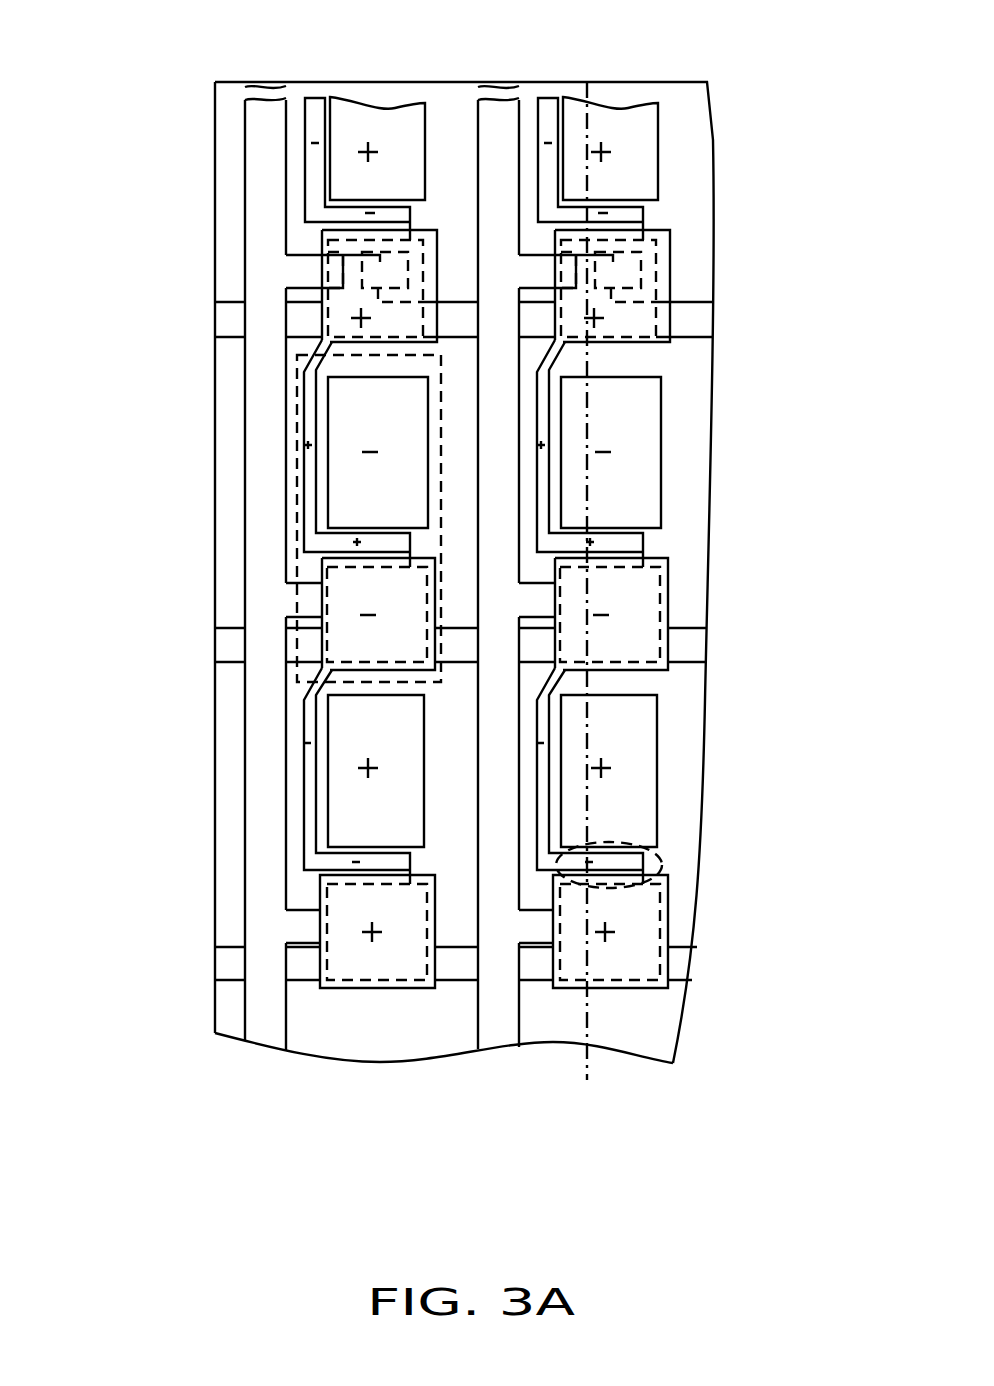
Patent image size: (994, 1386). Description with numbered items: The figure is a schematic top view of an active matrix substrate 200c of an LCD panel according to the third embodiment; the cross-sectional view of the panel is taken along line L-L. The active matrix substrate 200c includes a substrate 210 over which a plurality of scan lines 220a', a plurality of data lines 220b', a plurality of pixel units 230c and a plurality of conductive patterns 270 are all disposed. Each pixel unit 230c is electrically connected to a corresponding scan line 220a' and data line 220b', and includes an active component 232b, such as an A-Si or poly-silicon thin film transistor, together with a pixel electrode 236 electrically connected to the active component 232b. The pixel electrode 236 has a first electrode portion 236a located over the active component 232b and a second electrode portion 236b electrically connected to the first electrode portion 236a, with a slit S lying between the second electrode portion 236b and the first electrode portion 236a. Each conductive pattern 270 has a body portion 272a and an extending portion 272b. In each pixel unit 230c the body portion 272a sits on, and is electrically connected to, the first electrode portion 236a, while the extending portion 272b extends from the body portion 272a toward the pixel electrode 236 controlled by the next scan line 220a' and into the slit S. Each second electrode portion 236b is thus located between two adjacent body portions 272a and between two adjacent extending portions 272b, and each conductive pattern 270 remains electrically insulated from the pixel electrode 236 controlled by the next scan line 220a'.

The active matrix substrate 200c is at (823, 1054).
The substrate 210 is at (443, 113).
The data line 220b' is at (312, 527).
The scan line 220a' is at (410, 641).
The active component 232b is at (597, 312).
The pixel electrode 236 is at (712, 505).
The first electrode portion 236a is at (650, 578).
The second electrode portion 236b is at (650, 478).
The pixel unit 230c is at (297, 486).
The conductive pattern 270 is at (247, 721).
The body portion 272a is at (322, 652).
The extending portion 272b is at (307, 731).
The slit S is at (655, 860).
The line L- L is at (604, 1088).